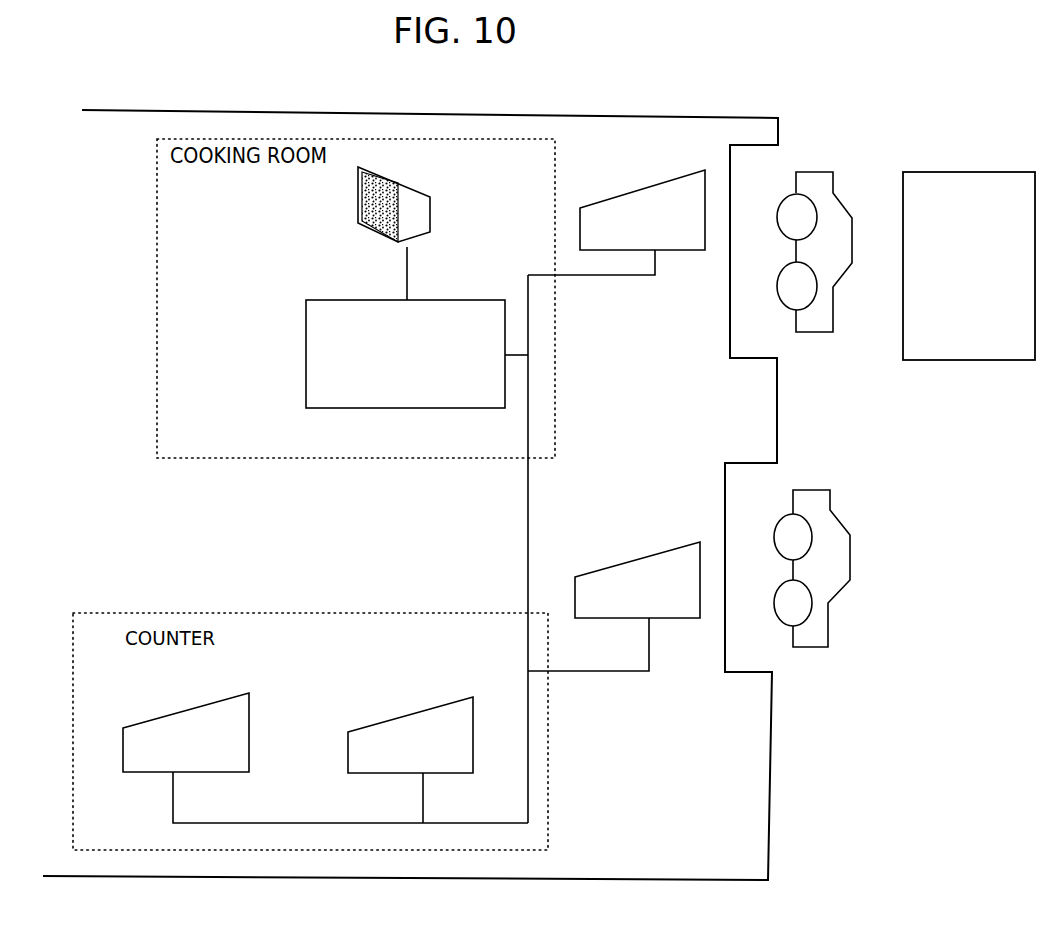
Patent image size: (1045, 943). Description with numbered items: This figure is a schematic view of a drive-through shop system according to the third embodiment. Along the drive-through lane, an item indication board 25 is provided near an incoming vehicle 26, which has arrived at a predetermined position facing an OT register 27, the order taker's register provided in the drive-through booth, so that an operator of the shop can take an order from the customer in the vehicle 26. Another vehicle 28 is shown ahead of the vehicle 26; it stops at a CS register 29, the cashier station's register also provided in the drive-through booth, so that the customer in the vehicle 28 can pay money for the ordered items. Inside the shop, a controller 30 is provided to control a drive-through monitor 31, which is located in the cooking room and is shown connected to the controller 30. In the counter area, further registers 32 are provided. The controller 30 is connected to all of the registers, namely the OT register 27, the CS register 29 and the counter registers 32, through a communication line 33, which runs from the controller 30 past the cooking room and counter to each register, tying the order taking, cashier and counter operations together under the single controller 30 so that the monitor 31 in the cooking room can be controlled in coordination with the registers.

The item indication board 25 is at (930, 172).
The incoming vehicle 26 is at (833, 172).
The OT register 27 is at (632, 192).
The vehicle 28 is at (825, 490).
The CS register 29 is at (627, 565).
The controller 30 is at (457, 300).
The drive-through monitor 31 is at (355, 227).
The registers 32 is at (185, 712).
The communication line 33 is at (528, 538).